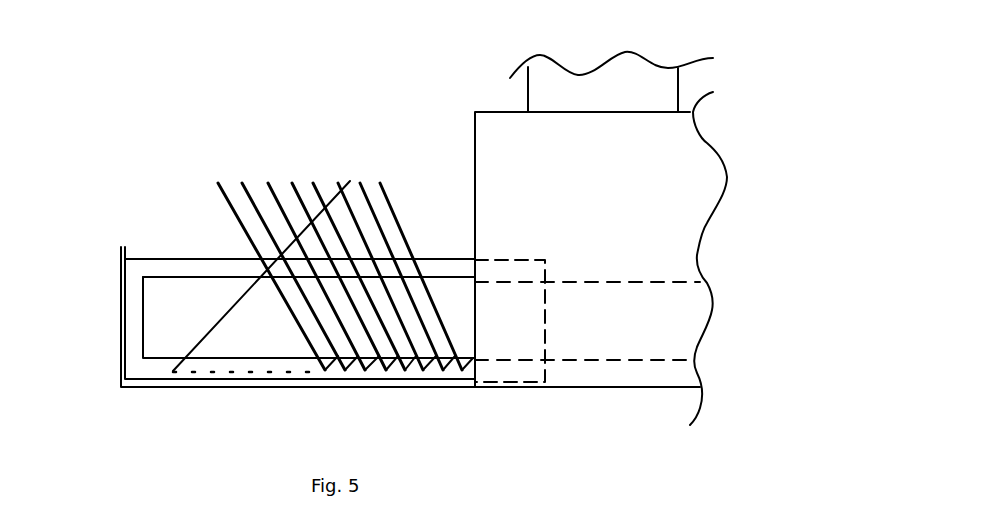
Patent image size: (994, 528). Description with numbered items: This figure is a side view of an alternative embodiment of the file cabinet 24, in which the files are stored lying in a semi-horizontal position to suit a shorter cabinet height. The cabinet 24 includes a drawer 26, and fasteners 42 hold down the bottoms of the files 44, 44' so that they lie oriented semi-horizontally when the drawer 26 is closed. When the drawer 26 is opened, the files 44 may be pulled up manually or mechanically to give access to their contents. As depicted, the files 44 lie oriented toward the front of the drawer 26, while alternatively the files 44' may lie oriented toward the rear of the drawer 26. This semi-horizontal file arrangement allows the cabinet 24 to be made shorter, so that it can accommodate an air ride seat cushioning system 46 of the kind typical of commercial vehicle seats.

The cabinet 24 is at (518, 192).
The drawer 26 is at (162, 293).
The fasteners 42 is at (390, 365).
The files 44 is at (310, 243).
The files 44' is at (261, 309).
The air ride seat cushioning system 46 is at (617, 92).